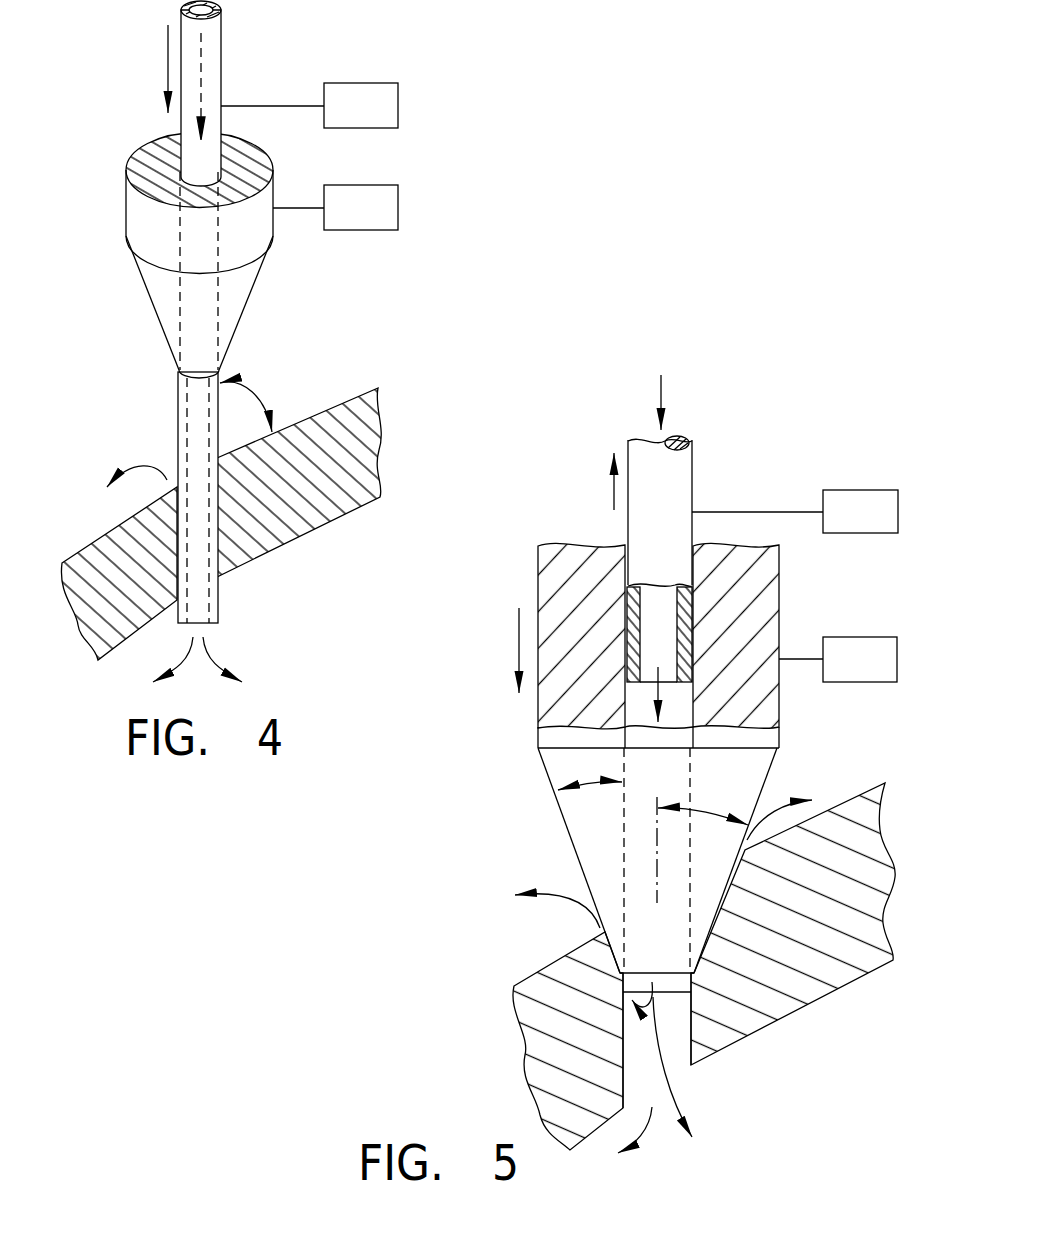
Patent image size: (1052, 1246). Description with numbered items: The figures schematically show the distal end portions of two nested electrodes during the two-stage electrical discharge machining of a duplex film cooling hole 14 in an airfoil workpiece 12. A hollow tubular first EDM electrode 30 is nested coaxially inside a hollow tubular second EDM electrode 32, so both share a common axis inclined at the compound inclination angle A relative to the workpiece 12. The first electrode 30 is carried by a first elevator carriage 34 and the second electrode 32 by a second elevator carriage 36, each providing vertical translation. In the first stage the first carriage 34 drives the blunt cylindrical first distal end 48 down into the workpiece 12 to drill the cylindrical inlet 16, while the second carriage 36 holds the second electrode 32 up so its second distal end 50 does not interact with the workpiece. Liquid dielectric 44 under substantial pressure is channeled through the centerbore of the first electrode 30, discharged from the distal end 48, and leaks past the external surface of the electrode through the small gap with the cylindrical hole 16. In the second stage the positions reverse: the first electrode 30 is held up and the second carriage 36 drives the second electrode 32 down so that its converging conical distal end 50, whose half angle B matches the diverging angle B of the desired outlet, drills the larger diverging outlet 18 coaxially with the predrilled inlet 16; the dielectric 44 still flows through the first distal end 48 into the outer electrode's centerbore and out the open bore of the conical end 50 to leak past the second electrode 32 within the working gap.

In FIG. 4, the workpiece 12 is at (107, 530).
In FIG. 5, the workpiece 12 is at (848, 876).
In FIG. 5, the film cooling hole 14 is at (620, 1040).
In FIG. 4, the cylindrical inlet 16 is at (178, 590).
In FIG. 5, the cylindrical inlet 16 is at (680, 1047).
In FIG. 5, the diverging outlet 18 is at (720, 904).
In FIG. 4, the first EDM electrode 30 is at (222, 52).
In FIG. 5, the first EDM electrode 30 is at (693, 473).
In FIG. 4, the second EDM electrode 32 is at (126, 198).
In FIG. 5, the second EDM electrode 32 is at (780, 580).
In FIG. 4, the first elevator carriage 34 is at (360, 83).
In FIG. 5, the first elevator carriage 34 is at (862, 490).
In FIG. 4, the second elevator carriage 36 is at (360, 185).
In FIG. 5, the second elevator carriage 36 is at (875, 637).
In FIG. 4, the liquid dielectric 44 is at (140, 467).
In FIG. 5, the liquid dielectric 44 is at (664, 392).
In FIG. 4, the first distal end 48 is at (219, 608).
In FIG. 5, the first distal end 48 is at (670, 683).
In FIG. 4, the second distal end 50 is at (244, 312).
In FIG. 5, the second distal end 50 is at (673, 958).
In FIG. 4, the inclination angle A is at (257, 393).
In FIG. 5, the inclination angle A is at (703, 808).
In FIG. 5, the half angle B is at (587, 786).